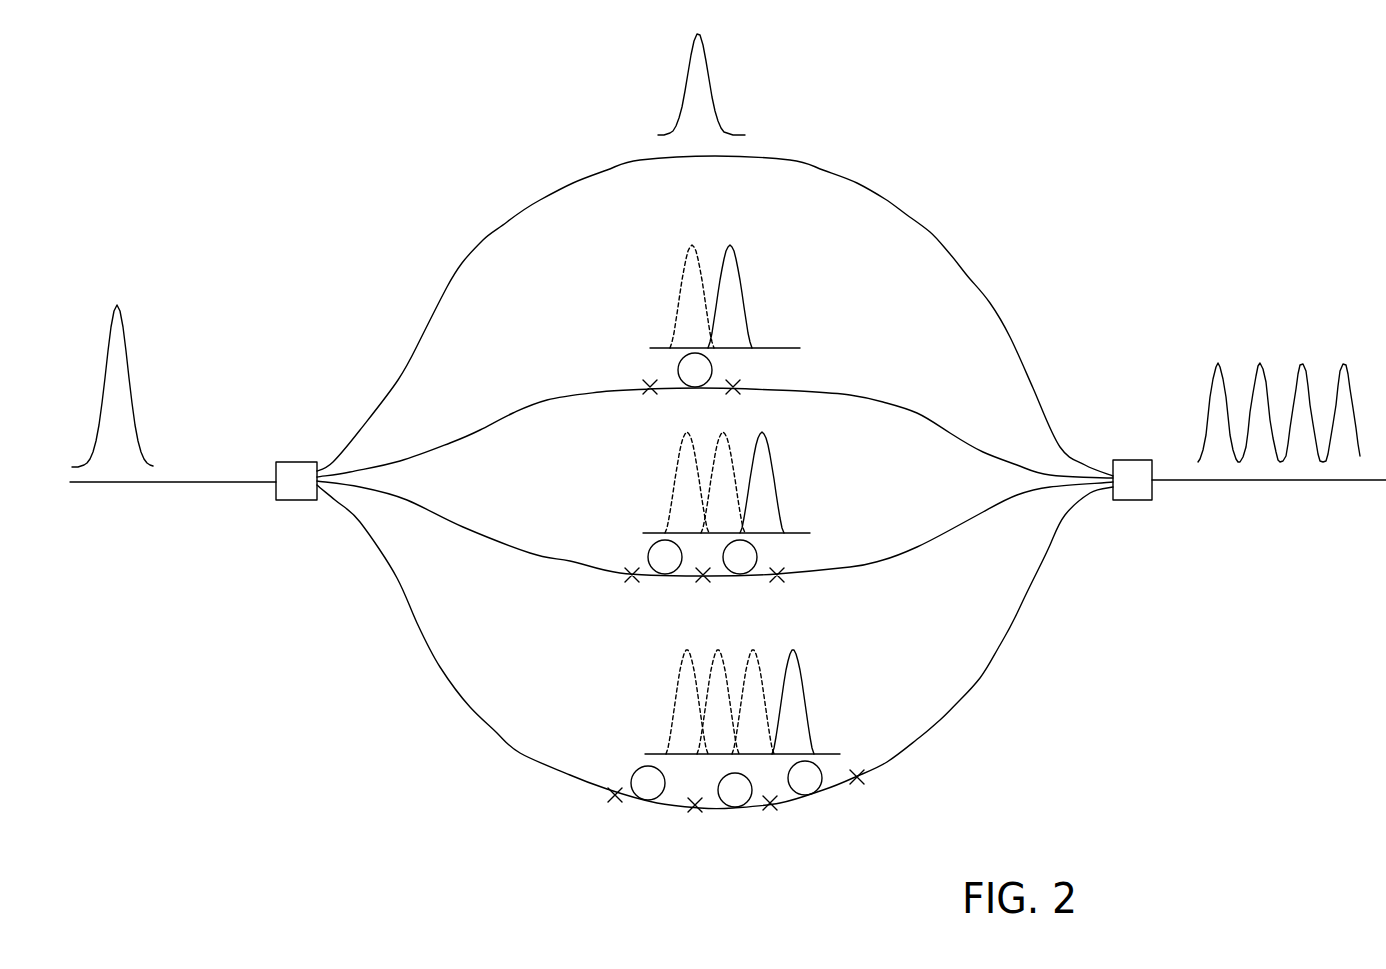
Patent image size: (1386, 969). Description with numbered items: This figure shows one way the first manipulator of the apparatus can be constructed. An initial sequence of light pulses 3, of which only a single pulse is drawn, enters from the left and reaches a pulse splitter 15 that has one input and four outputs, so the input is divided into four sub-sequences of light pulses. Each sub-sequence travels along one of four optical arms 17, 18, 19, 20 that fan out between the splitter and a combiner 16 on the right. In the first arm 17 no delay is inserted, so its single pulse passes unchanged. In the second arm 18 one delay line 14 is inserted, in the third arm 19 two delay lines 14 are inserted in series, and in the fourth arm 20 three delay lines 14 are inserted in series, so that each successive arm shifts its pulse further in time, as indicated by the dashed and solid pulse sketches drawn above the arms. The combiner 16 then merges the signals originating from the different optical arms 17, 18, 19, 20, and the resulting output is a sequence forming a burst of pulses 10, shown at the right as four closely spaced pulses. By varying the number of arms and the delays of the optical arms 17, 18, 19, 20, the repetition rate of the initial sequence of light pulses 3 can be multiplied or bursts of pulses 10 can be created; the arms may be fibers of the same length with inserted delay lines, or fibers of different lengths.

The initial sequence of light pulses 3 is at (122, 297).
The burst of pulses 10 is at (1273, 360).
The delay line 14 is at (723, 368).
The pulse splitter 15 is at (300, 500).
The combiner 16 is at (1143, 500).
The first optical arm 17 is at (462, 263).
The second optical arm 18 is at (547, 399).
The third optical arm 19 is at (570, 560).
The fourth optical arm 20 is at (520, 752).